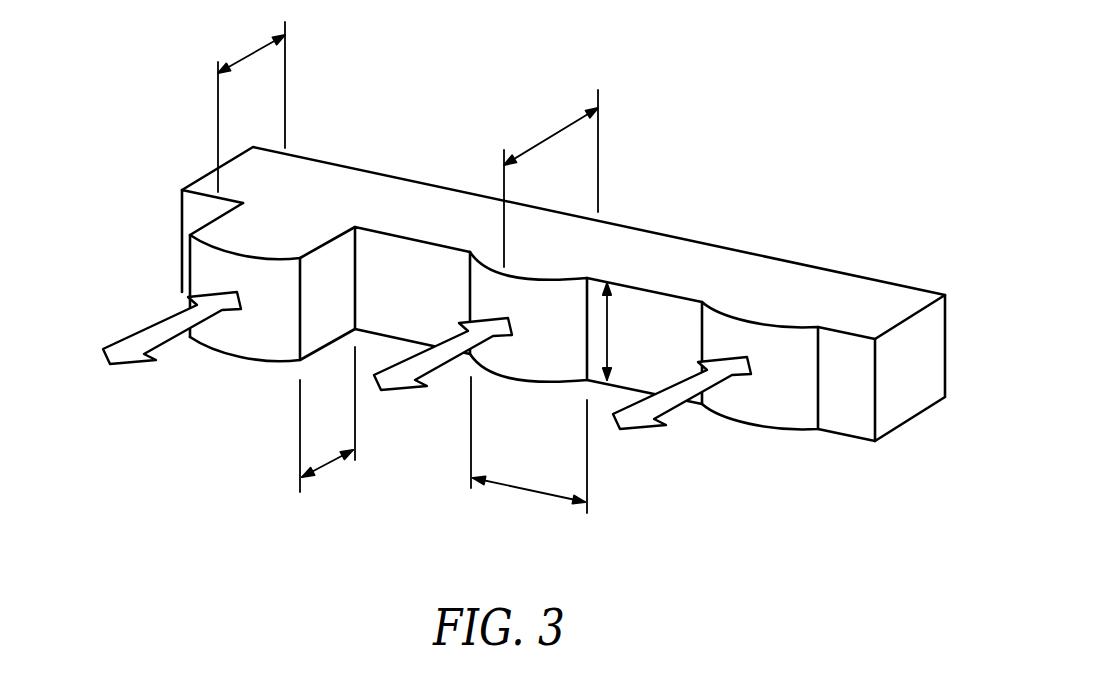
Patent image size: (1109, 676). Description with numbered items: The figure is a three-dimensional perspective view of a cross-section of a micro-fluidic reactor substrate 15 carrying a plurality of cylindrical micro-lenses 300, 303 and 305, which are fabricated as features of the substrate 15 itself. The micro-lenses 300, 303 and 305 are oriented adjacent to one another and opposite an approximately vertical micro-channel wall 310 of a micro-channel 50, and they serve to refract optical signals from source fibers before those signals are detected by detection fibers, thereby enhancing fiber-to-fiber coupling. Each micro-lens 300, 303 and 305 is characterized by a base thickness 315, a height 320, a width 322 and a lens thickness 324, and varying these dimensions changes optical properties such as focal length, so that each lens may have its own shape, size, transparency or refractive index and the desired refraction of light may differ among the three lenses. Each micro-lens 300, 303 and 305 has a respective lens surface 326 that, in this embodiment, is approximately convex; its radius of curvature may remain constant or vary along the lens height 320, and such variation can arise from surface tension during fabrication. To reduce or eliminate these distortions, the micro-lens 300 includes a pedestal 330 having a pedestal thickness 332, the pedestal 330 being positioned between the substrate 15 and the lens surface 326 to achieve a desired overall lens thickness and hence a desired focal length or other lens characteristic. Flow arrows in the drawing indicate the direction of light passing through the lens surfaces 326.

The micro-fluidic reactor substrate 15 is at (202, 183).
The micro-channel 50 is at (772, 149).
The micro-lens 300 is at (248, 242).
The micro-lens 303 is at (532, 273).
The micro-lens 305 is at (758, 312).
The micro-channel wall 310 is at (606, 219).
The base thickness 315 is at (247, 53).
The height 320 is at (608, 337).
The width 322 is at (527, 492).
The lens thickness 324 is at (552, 137).
The lens surface 326 is at (225, 323).
The pedestal 330 is at (337, 281).
The pedestal thickness 332 is at (325, 466).